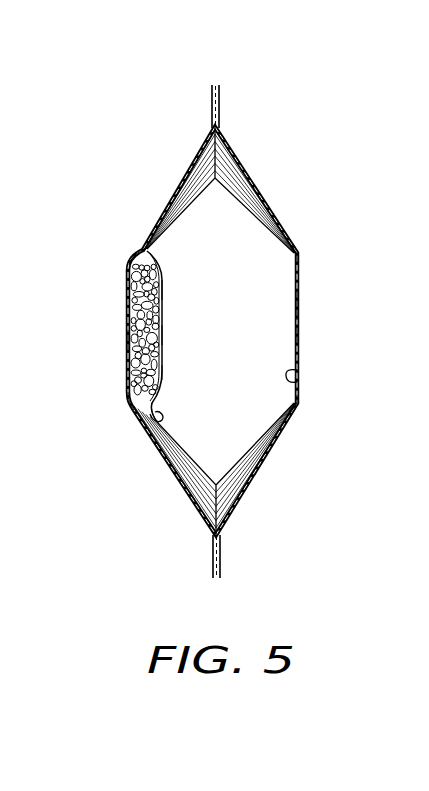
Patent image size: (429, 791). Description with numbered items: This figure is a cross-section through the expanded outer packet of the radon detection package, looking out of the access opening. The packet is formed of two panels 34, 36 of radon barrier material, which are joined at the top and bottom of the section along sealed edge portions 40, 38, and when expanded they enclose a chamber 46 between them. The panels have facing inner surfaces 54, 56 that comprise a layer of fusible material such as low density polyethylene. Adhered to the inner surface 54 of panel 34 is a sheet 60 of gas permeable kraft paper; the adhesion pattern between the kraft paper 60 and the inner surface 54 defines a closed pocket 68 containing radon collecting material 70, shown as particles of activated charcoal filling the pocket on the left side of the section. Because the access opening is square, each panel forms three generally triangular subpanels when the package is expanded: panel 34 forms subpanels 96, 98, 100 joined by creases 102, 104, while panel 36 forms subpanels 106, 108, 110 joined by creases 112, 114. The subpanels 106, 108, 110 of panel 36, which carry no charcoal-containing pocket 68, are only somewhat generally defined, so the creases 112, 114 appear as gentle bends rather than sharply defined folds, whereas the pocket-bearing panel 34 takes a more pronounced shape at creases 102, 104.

The panel 34 is at (129, 342).
The panel 36 is at (300, 304).
The sealed edge portion 38 is at (220, 580).
The sealed edge portion 40 is at (216, 84).
The chamber 46 is at (239, 440).
The inner surface 54 is at (150, 438).
The inner surface 56 is at (300, 380).
The sheet of gas permeable material 60 is at (164, 283).
The closed pocket 68 is at (163, 334).
The radon collecting material 70 is at (160, 381).
The triangular subpanel 96 is at (185, 490).
The triangular subpanel 98 is at (128, 302).
The triangular subpanel 100 is at (188, 181).
The crease 102 is at (128, 398).
The crease 104 is at (140, 245).
The subpanel 106 is at (262, 465).
The subpanel 108 is at (300, 335).
The subpanel 110 is at (240, 167).
The crease 112 is at (300, 405).
The crease 114 is at (298, 254).